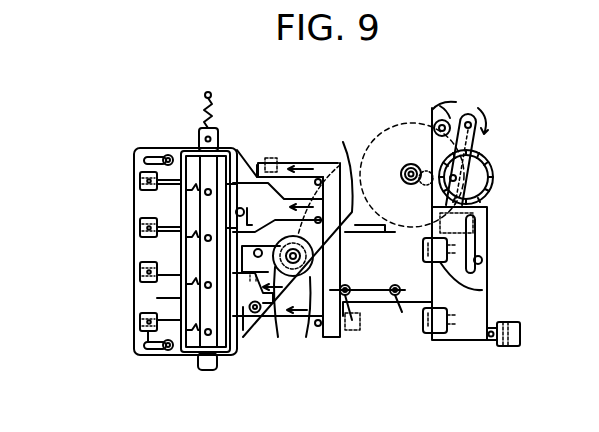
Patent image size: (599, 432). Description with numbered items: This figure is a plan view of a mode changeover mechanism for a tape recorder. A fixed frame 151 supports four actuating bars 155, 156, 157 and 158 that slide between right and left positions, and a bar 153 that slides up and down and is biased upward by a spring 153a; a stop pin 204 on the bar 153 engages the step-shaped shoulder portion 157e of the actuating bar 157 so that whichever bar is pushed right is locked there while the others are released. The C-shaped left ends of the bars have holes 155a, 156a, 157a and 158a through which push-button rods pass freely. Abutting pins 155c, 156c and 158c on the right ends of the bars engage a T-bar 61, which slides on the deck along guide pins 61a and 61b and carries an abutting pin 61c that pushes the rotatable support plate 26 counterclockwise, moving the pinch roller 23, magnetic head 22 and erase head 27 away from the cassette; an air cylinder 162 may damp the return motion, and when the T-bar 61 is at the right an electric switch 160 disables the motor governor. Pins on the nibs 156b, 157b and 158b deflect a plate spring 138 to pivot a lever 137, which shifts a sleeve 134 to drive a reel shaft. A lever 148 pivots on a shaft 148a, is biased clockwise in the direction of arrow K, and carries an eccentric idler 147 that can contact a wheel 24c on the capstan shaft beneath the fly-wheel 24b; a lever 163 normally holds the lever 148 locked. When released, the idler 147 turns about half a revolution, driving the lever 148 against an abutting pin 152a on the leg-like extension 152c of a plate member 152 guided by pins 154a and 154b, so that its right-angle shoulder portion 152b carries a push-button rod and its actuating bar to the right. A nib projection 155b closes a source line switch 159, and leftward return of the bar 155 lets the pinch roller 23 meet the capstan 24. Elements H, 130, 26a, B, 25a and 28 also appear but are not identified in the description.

The housing H is at (143, 361).
The plate member 152 is at (247, 345).
The abutting pin 152a is at (487, 204).
The right-angle shoulder portion 152b is at (134, 287).
The leg-like extension 152c is at (385, 268).
The bar 153 is at (217, 128).
The spring 153a is at (203, 110).
The guide pin 154a is at (164, 156).
The guide pin 154b is at (170, 352).
The actuating bar 155 is at (195, 157).
The hole 155a is at (140, 180).
The nib projection 155b is at (260, 165).
The abutting pin 155c is at (317, 179).
The actuating bar 156 is at (185, 232).
The hole 156a is at (140, 227).
The projection or nib 156b is at (236, 211).
The abutting pin 156c is at (305, 228).
The actuating bar 157 is at (205, 288).
The hole 157a is at (150, 268).
The projection 157b is at (250, 314).
The step-shaped shoulder portion 157e is at (147, 330).
The actuating bar 158 is at (184, 353).
The hole 158a is at (140, 320).
The nib 158b is at (266, 338).
The abutting pin 158c is at (328, 322).
The source line switch 159 is at (273, 158).
The frame 151 is at (237, 157).
The plate spring 138 is at (255, 240).
The lever 137 is at (256, 313).
The mounting plate 130 is at (318, 327).
The stop pin 204 is at (200, 296).
The pinch roller 23 is at (410, 186).
The capstan 24 is at (411, 164).
The fly-wheel 24b is at (380, 130).
The wheel 24c is at (405, 167).
The sleeve 134 is at (358, 177).
The support plate 26 is at (487, 297).
The motor pinion 26a is at (442, 120).
The direction of rotation B is at (448, 110).
The lever 148 is at (478, 142).
The shaft 148a is at (472, 118).
The arrow K is at (485, 112).
The eccentric idler 147 is at (493, 170).
The slot 25a is at (475, 232).
The pin 28 is at (482, 260).
The magnetic head 22 is at (447, 265).
The air cylinder 162 is at (528, 340).
The lever 163 is at (385, 230).
The T-bar 61 is at (366, 286).
The guide pin 61a is at (350, 298).
The guide pin 61b is at (400, 298).
The abutting pin 61c is at (440, 300).
The erase head 27 is at (437, 333).
The electric switch 160 is at (352, 330).